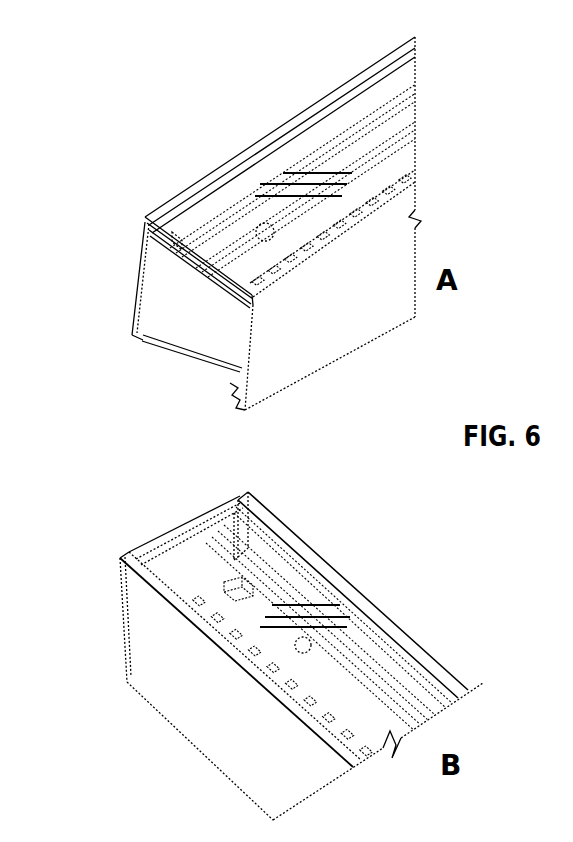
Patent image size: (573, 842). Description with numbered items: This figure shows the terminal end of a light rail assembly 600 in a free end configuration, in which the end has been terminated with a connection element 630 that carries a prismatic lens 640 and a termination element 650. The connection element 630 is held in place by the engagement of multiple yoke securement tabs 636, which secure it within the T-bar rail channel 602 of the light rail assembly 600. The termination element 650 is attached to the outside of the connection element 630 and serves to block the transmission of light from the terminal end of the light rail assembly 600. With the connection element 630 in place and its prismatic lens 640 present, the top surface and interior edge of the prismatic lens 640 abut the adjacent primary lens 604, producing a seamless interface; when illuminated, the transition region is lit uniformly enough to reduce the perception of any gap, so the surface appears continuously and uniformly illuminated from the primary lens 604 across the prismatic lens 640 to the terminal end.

The light rail assembly 600 is at (75, 152).
The T-bar rail channel 602 is at (302, 333).
The primary lens 604 is at (292, 178).
The connection element 630 is at (227, 277).
The yoke securement tab 636 is at (180, 232).
The prismatic lens 640 is at (181, 574).
The termination element 650 is at (162, 272).